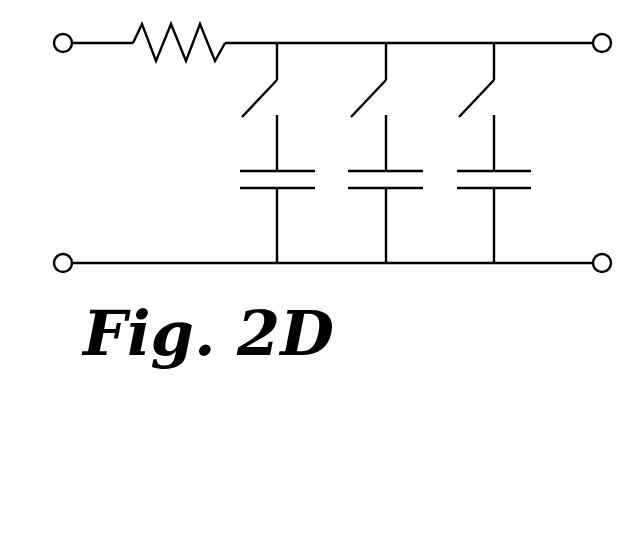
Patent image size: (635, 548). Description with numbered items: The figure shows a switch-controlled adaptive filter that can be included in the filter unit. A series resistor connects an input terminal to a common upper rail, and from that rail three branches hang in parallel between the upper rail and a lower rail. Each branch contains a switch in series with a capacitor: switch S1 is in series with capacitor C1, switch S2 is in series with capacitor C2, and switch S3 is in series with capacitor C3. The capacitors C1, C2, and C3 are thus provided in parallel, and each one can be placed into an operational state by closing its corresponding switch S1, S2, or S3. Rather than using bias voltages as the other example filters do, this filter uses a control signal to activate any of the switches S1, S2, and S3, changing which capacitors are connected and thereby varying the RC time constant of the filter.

The switch S1 is at (246, 84).
The switch S2 is at (355, 84).
The switch S3 is at (463, 84).
The capacitor C1 is at (276, 194).
The capacitor C2 is at (385, 194).
The capacitor C3 is at (493, 194).